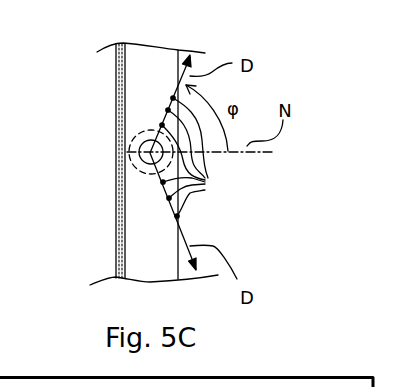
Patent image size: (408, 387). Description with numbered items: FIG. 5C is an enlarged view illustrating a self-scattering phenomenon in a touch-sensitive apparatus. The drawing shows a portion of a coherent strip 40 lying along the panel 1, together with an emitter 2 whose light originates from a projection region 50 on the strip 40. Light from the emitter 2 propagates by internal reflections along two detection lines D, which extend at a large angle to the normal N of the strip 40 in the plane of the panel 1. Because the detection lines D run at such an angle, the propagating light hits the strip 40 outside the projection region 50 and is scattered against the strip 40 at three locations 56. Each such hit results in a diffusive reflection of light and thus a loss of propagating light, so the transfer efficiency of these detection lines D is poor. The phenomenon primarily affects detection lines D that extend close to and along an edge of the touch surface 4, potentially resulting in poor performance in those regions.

The panel 1 is at (116, 90).
The emitter 2 is at (140, 158).
The touch surface 4 is at (233, 227).
The coherent strip 40 is at (147, 62).
The projection region 50 is at (133, 139).
The locations 56 is at (200, 157).